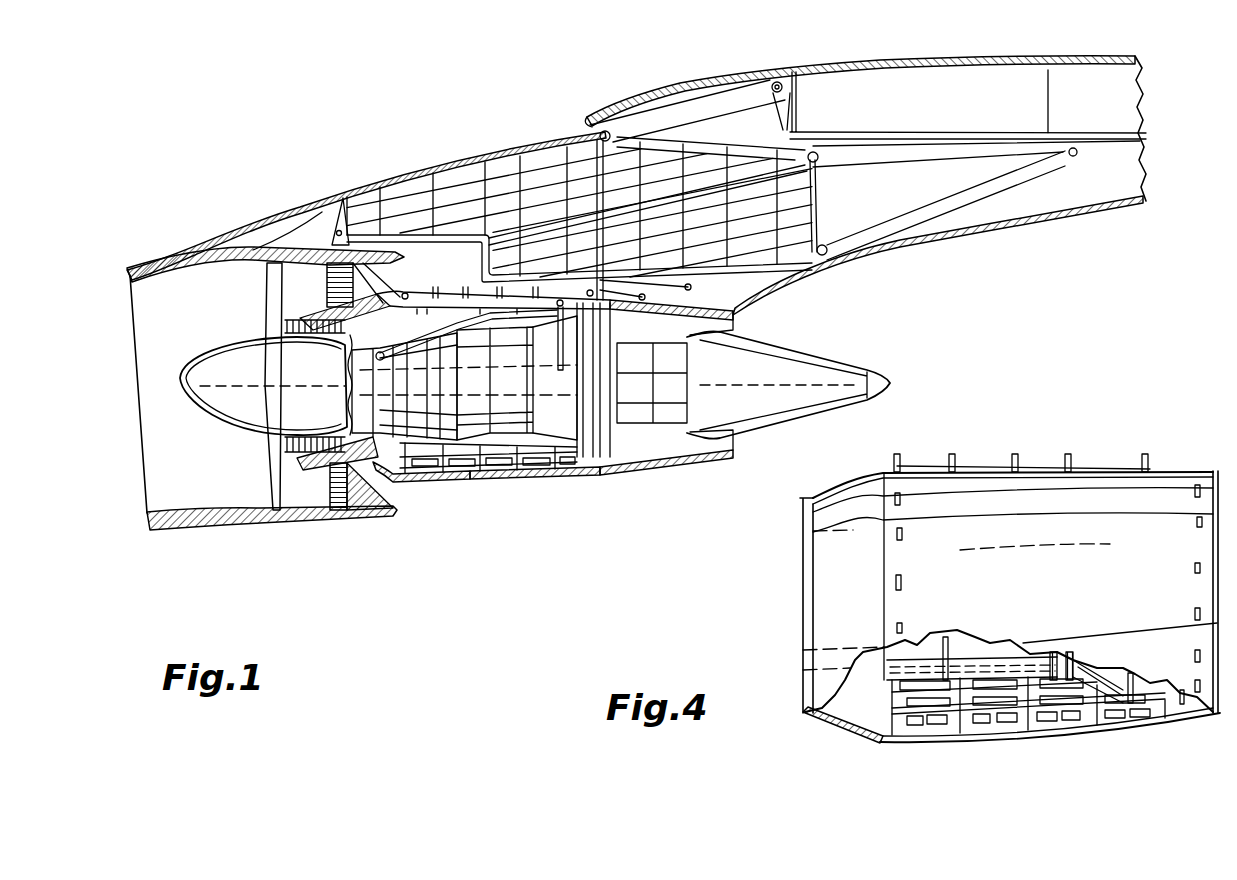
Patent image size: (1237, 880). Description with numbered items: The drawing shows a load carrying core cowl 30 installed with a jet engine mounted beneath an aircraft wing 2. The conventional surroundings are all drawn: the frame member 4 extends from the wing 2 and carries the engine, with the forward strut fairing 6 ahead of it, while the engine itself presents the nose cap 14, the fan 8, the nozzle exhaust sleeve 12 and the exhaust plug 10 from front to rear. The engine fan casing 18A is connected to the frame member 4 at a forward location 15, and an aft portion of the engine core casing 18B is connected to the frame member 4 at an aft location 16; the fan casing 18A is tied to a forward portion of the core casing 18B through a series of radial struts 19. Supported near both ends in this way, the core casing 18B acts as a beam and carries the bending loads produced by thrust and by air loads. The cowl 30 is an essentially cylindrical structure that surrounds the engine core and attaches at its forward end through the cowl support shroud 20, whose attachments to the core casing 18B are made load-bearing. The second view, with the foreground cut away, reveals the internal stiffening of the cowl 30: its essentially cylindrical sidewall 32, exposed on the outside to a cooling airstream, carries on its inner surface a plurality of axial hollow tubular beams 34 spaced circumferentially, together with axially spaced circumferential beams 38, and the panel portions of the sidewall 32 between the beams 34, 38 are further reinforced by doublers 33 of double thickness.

In FIG. 1, the wing 2 is at (840, 88).
In FIG. 1, the frame member 4 is at (472, 168).
In FIG. 1, the forward strut fairing 6 is at (308, 198).
In FIG. 1, the fan 8 is at (270, 470).
In FIG. 1, the exhaust plug 10 is at (822, 410).
In FIG. 1, the nozzle exhaust sleeve 12 is at (705, 458).
In FIG. 1, the nose cap 14 is at (180, 375).
In FIG. 1, the forward location 15 is at (330, 243).
In FIG. 1, the aft location 16 is at (735, 325).
In FIG. 1, the engine fan casing 18A is at (327, 287).
In FIG. 1, the engine core casing 18B is at (538, 368).
In FIG. 4, the engine core casing 18B is at (985, 658).
In FIG. 1, the radial struts 19 is at (285, 250).
In FIG. 1, the cowl support shroud 20 is at (393, 480).
In FIG. 4, the cowl support shroud 20 is at (860, 565).
In FIG. 1, the load carrying core cowl 30 is at (508, 474).
In FIG. 4, the load carrying core cowl 30 is at (1170, 458).
In FIG. 1, the sidewall 32 is at (487, 487).
In FIG. 4, the sidewall 32 is at (1120, 713).
In FIG. 4, the doublers 33 is at (1100, 715).
In FIG. 1, the hollow tubular beams 34 is at (436, 483).
In FIG. 4, the hollow tubular beams 34 is at (982, 717).
In FIG. 1, the circumferential beams 38 is at (507, 483).
In FIG. 4, the circumferential beams 38 is at (955, 718).